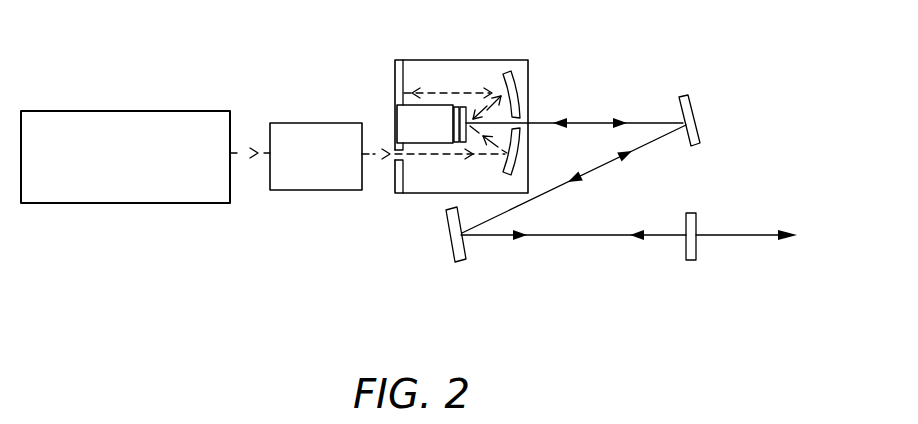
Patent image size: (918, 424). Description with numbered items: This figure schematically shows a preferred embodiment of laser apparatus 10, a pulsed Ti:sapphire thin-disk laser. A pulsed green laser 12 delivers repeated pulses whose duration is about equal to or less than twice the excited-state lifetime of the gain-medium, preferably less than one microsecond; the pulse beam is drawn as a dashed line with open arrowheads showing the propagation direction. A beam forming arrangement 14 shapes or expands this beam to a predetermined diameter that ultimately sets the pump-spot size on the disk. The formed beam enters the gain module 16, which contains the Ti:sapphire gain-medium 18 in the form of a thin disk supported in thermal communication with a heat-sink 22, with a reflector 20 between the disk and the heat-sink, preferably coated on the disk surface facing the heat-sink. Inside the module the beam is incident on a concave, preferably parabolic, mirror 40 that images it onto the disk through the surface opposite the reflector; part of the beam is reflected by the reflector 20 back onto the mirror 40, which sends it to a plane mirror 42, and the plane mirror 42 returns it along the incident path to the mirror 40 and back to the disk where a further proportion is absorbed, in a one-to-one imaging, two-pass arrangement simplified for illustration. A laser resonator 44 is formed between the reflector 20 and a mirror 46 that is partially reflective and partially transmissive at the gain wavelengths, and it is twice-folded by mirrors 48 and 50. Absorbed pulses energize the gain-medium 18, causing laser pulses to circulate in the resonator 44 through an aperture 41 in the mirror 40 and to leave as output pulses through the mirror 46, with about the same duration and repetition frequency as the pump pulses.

The laser apparatus 10 is at (278, 316).
The pulsed green laser 12 is at (135, 203).
The beam forming arrangement 14 is at (300, 190).
The gain module 16 is at (416, 204).
The Ti:sapphire gain-medium 18 is at (466, 104).
The reflector 20 is at (458, 96).
The heat-sink 22 is at (433, 96).
The concave mirror 40 is at (508, 85).
The aperture 41 is at (522, 112).
The plane mirror 42 is at (401, 77).
The laser resonator 44 is at (660, 113).
The partially transmissive mirror 46 is at (686, 248).
The fold mirror 48 is at (465, 243).
The fold mirror 50 is at (691, 129).